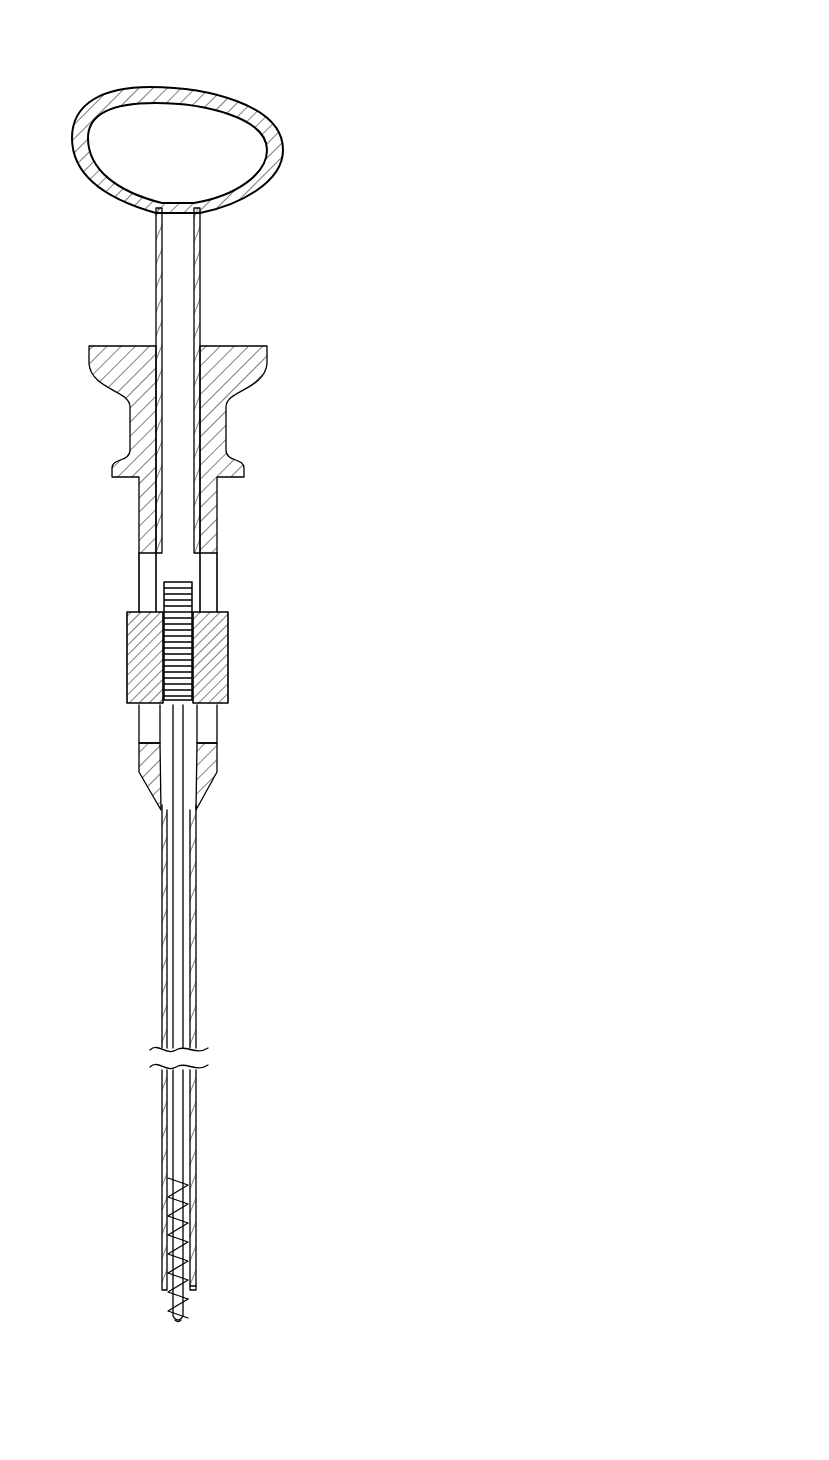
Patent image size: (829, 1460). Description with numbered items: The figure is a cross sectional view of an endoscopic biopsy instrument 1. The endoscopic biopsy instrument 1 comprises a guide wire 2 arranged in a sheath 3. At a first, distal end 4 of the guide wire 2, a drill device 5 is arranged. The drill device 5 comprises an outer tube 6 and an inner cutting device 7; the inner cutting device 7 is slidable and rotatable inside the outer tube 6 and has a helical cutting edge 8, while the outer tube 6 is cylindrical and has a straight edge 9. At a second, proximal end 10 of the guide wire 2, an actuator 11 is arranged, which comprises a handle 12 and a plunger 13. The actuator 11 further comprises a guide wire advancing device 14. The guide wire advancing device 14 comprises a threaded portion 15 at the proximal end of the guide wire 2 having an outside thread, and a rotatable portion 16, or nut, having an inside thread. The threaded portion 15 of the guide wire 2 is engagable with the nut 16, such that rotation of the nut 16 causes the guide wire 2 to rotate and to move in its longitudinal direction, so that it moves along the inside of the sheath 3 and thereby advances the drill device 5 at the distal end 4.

The endoscopic biopsy instrument 1 is at (436, 102).
The guide wire 2 is at (178, 1108).
The sheath 3 is at (193, 1157).
The first, distal end 4 is at (168, 1177).
The drill device 5 is at (199, 1322).
The outer tube 6 is at (162, 1247).
The inner cutting device 7 is at (173, 1307).
The helical cutting edge 8 is at (170, 1297).
The straight edge 9 is at (193, 1293).
The second, proximal end 10 is at (178, 728).
The actuator 11 is at (370, 199).
The handle 12 is at (252, 362).
The plunger 13 is at (280, 116).
The guide wire advancing device 14 is at (108, 594).
The threaded portion 15 is at (178, 597).
The rotatable portion 16 is at (215, 633).